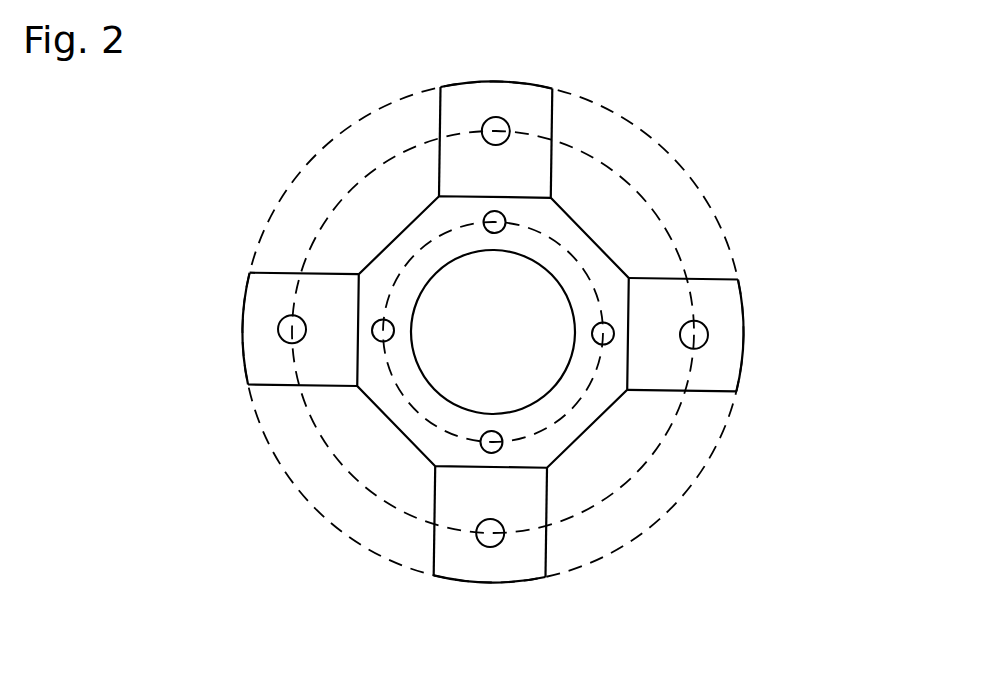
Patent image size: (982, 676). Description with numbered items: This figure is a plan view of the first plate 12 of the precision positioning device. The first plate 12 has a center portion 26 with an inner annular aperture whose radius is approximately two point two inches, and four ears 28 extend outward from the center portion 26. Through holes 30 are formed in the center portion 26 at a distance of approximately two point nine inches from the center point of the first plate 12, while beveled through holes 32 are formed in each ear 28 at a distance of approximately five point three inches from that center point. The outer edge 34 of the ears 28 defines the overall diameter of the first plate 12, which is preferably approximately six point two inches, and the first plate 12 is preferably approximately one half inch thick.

The first plate 12 is at (556, 271).
The center portion 26 is at (590, 291).
The ears 28 is at (492, 335).
The through holes 30 is at (490, 356).
The beveled through holes 32 is at (495, 332).
The outer edge 34 is at (493, 332).